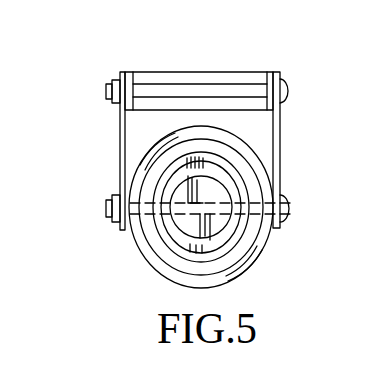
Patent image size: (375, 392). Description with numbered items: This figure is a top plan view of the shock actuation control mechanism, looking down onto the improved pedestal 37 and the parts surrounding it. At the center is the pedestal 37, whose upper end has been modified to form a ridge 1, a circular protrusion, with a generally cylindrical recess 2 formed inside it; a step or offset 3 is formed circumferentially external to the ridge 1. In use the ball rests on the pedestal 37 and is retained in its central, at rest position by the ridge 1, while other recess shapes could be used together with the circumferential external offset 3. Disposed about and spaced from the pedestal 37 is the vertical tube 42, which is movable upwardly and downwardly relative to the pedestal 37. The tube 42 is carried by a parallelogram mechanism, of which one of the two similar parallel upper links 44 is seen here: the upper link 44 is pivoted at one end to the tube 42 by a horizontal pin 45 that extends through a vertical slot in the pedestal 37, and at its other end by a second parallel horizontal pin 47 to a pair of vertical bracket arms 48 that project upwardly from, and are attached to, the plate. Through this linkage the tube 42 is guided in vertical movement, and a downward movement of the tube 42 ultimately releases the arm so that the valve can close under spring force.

The ridge 1 is at (166, 198).
The cylindrical recess 2 is at (180, 193).
The step or offset 3 is at (157, 233).
The pedestal 37 is at (157, 257).
The vertical tube 42 is at (260, 252).
The upper link 44 is at (273, 152).
The horizontal pin 45 is at (288, 200).
The second parallel horizontal pin 47 is at (247, 90).
The vertical bracket arm 48 is at (208, 72).